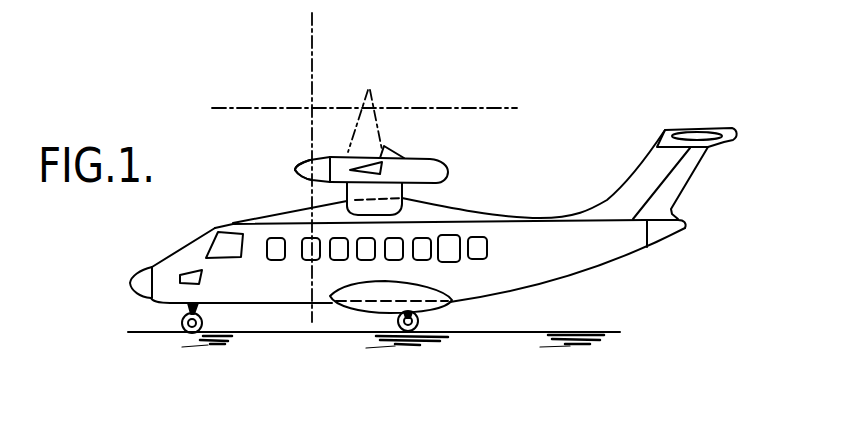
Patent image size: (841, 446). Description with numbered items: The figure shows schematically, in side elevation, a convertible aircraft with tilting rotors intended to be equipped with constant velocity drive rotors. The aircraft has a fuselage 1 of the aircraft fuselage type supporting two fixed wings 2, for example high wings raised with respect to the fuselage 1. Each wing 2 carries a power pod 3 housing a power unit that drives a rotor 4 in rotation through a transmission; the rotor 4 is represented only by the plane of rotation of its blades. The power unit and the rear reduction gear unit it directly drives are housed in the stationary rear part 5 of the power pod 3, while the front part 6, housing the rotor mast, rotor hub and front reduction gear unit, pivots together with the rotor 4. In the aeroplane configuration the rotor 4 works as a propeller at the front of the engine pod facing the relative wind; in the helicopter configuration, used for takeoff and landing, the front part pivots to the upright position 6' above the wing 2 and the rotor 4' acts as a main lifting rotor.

The fuselage 1 is at (285, 307).
The fixed wing 2 is at (402, 198).
The power pod 3 is at (390, 136).
The rotor 4 is at (282, 161).
The rotor in helicopter configuration 4' is at (366, 71).
The stationary rear part of the power pod 5 is at (413, 172).
The front part of the power pod 6 is at (272, 147).
The front pivoting part of the pod in upright position 6' is at (380, 92).